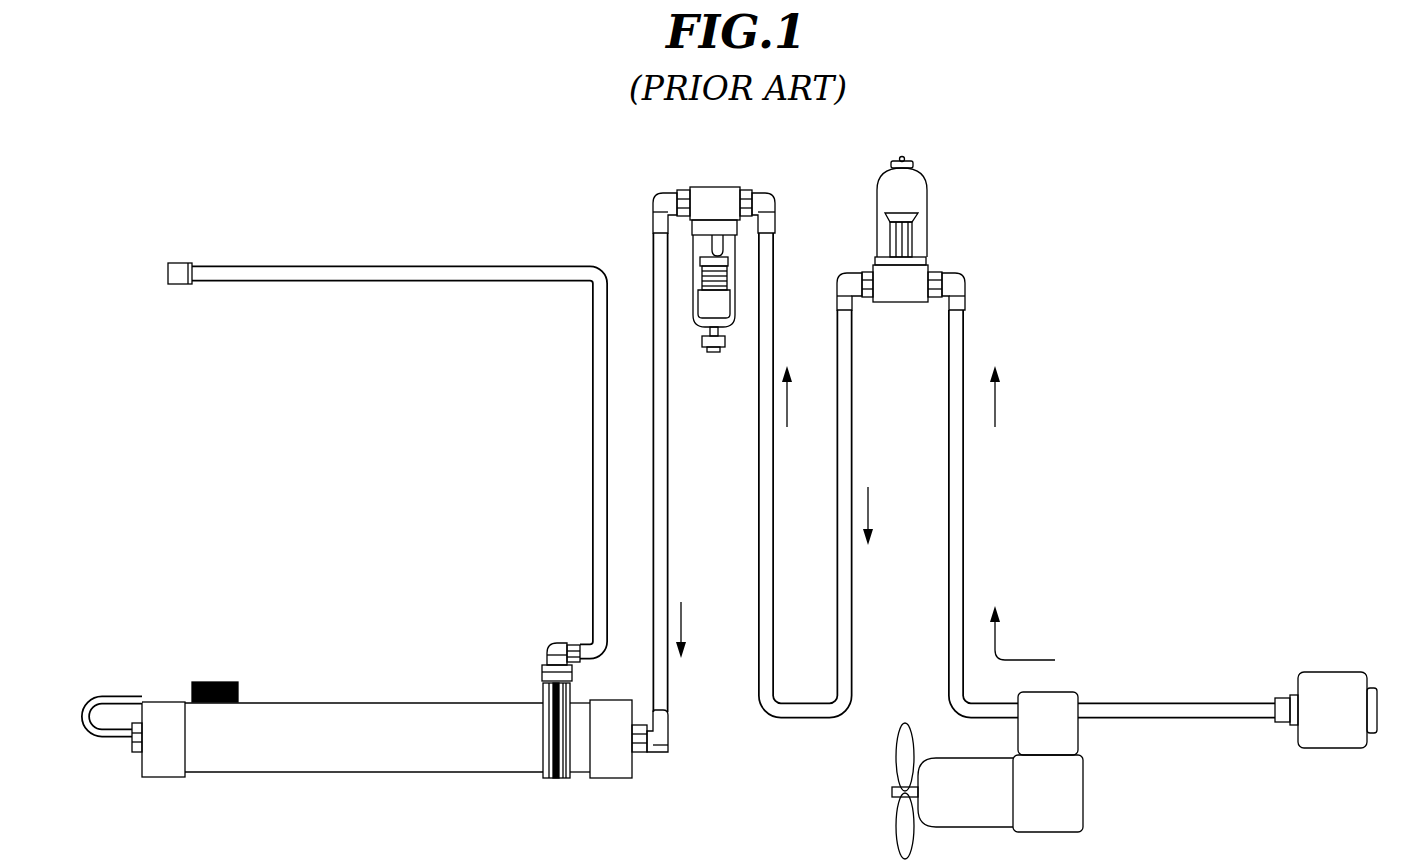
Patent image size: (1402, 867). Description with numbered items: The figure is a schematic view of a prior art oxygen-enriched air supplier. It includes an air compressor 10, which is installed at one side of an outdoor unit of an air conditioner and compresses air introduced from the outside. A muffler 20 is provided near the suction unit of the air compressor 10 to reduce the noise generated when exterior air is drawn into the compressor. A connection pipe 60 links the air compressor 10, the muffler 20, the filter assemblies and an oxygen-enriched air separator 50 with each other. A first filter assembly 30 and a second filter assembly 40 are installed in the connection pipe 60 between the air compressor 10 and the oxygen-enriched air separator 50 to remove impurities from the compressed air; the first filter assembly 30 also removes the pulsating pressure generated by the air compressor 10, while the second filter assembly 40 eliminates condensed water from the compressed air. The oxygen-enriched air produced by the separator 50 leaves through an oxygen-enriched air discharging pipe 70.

The air compressor 10 is at (1075, 797).
The muffler 20 is at (1329, 683).
The first filter assembly 30 is at (918, 200).
The second filter assembly 40 is at (716, 193).
The oxygen-enriched air separator 50 is at (354, 713).
The connection pipe 60 is at (763, 513).
The oxygen-enriched air discharging pipe 70 is at (520, 270).